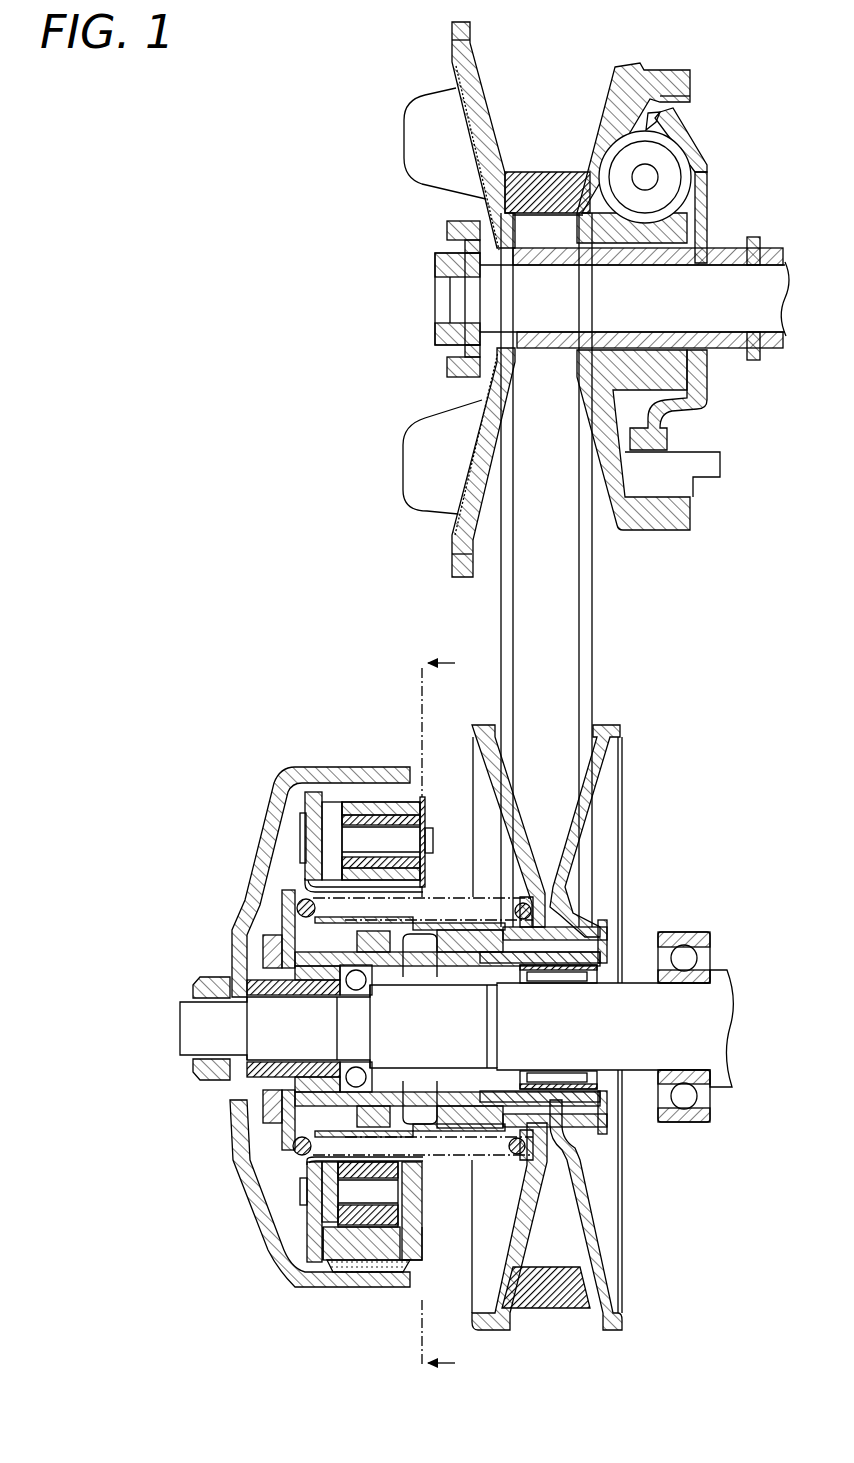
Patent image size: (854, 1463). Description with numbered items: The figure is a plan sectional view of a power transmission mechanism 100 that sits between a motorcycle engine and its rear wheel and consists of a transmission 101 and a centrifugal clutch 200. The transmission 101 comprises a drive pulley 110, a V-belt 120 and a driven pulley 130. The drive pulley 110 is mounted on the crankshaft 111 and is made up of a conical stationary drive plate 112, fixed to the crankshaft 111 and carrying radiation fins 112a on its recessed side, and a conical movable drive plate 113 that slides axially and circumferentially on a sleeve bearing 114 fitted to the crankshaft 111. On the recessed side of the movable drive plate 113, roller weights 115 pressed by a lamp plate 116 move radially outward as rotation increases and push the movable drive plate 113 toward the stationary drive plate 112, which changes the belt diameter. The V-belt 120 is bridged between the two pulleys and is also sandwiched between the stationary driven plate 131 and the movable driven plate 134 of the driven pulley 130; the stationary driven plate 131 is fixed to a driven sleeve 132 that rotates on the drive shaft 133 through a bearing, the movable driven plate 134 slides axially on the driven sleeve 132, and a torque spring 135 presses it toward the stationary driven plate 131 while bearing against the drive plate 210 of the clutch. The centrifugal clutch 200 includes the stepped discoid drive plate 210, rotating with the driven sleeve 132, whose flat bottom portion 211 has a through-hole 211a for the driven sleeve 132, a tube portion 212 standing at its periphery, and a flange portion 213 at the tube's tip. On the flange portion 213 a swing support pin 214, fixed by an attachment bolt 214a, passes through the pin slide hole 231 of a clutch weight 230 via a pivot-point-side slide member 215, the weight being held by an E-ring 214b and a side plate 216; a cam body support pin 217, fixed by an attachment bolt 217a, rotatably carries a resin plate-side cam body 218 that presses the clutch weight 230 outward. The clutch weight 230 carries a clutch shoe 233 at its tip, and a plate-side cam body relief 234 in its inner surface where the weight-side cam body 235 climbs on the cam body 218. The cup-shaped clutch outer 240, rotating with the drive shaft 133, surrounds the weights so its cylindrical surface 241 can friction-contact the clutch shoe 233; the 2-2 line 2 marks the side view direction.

The power transmission mechanism 100 is at (250, 258).
The transmission 101 is at (714, 75).
The drive pulley 110 is at (585, 40).
The crankshaft 111 is at (772, 299).
The stationary drive plate 112 is at (481, 83).
The radiation fins 112a is at (402, 128).
The movable drive plate 113 is at (607, 98).
The sleeve bearing 114 is at (543, 349).
The roller weight 115 is at (683, 128).
The lamp plate 116 is at (706, 191).
The V-belt 120 is at (543, 171).
The driven pulley 130 is at (737, 665).
The stationary driven plate 131 is at (610, 724).
The driven sleeve 132 is at (620, 940).
The drive shaft 133 is at (730, 1028).
The movable driven plate 134 is at (484, 723).
The torque spring 135 is at (448, 897).
The centrifugal clutch 200 is at (214, 777).
The drive plate 210 is at (288, 923).
The bottom portion 211 is at (300, 931).
The through-hole 211a is at (260, 975).
The tube portion 212 is at (298, 906).
The flange portion 213 is at (310, 796).
The swing support pin 214 is at (350, 800).
The attachment bolt 214a is at (300, 838).
The E-ring 214b is at (428, 833).
The pivot-point-side slide member 215 is at (381, 816).
The side plate 216 is at (422, 797).
The cam body support pin 217 is at (333, 1227).
The attachment bolt 217a is at (300, 1190).
The plate-side cam body 218 is at (295, 1145).
The clutch weight 230 is at (313, 795).
The pin slide hole 231 is at (340, 850).
The clutch shoe 233 is at (411, 1268).
The plate-side cam body relief 234 is at (327, 1232).
The weight-side cam body 235 is at (361, 1228).
The clutch outer 240 is at (280, 787).
The cylindrical surface 241 is at (300, 1272).
The 2-2 line 2 is at (446, 1015).